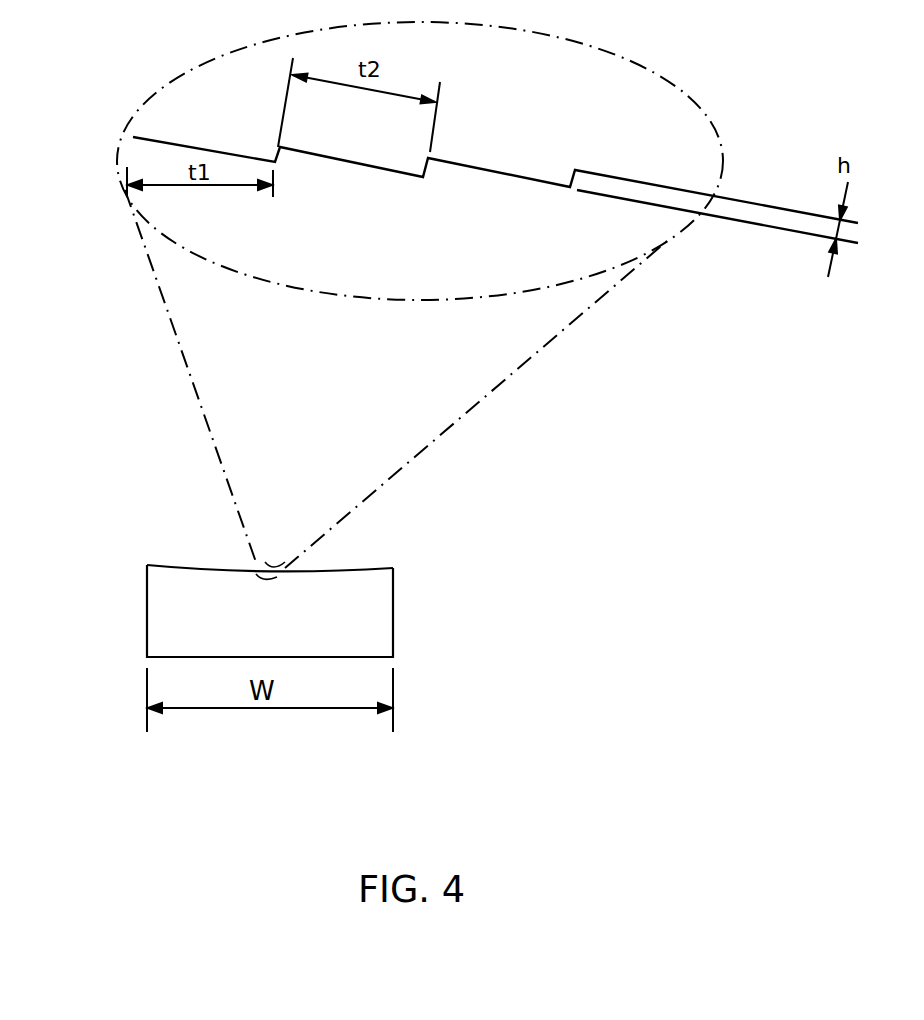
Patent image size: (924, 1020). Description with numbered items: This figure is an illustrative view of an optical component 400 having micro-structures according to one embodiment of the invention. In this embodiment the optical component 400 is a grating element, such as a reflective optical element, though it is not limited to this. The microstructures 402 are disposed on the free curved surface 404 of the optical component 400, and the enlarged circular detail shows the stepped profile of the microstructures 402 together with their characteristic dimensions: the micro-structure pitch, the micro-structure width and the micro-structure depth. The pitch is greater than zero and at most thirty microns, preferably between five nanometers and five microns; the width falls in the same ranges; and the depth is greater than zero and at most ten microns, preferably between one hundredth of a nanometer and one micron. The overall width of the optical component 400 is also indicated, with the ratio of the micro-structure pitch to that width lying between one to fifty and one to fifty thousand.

The optical component 400 is at (393, 622).
The microstructures 402 is at (165, 157).
The free curved surface 404 is at (372, 562).